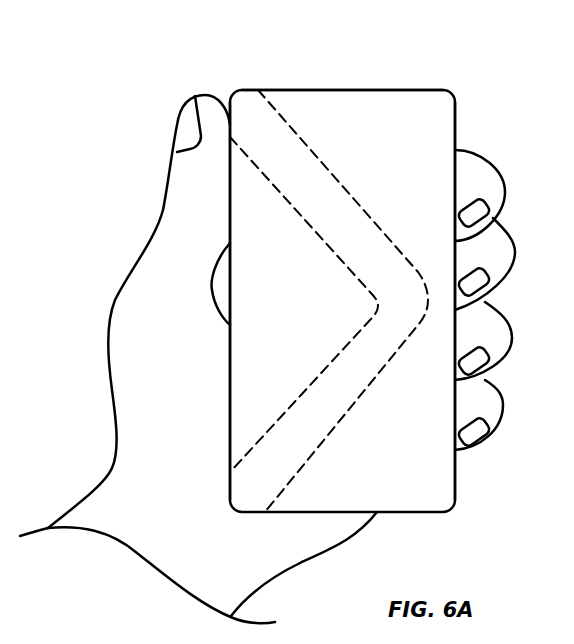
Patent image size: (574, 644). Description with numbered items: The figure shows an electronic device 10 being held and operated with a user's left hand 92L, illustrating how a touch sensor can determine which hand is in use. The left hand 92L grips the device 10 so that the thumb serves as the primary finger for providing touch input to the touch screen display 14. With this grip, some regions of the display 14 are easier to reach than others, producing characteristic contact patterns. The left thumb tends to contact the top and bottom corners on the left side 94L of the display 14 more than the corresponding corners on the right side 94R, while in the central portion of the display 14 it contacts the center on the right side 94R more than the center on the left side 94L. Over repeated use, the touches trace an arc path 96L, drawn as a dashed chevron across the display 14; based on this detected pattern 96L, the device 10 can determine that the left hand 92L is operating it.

The electronic device 10 is at (417, 70).
The touch screen display 14 is at (435, 117).
The left hand 92L is at (148, 262).
The left side 94L is at (230, 370).
The right side 94R is at (455, 472).
The arc path 96L is at (300, 153).